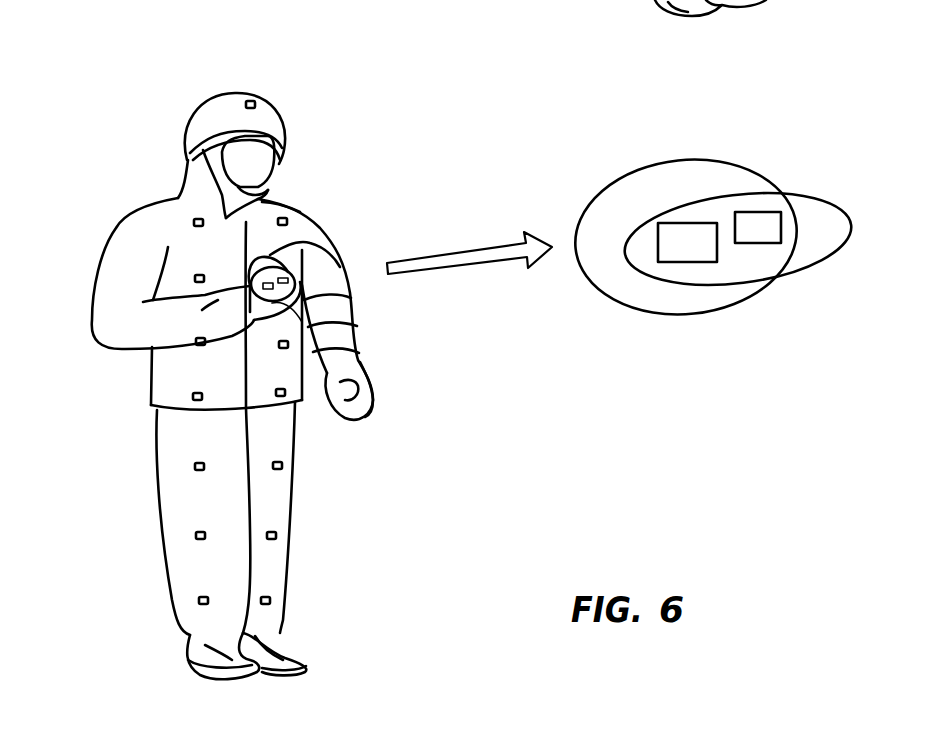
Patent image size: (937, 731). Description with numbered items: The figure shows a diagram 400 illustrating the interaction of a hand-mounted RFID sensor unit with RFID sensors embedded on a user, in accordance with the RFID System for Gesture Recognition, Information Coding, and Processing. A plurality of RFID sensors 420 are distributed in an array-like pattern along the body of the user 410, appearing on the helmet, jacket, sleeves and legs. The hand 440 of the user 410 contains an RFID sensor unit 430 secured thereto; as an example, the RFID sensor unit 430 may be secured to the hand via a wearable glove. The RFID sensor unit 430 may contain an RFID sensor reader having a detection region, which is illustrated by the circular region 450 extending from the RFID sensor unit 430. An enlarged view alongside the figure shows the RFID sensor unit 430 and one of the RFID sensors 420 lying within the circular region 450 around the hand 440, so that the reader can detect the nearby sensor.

The diagram 400 is at (146, 84).
The user 410 is at (186, 125).
The RFID sensors 420 is at (252, 108).
The RFID sensor unit 430 is at (278, 275).
The hand 440 is at (308, 297).
The circular region 450 is at (312, 322).